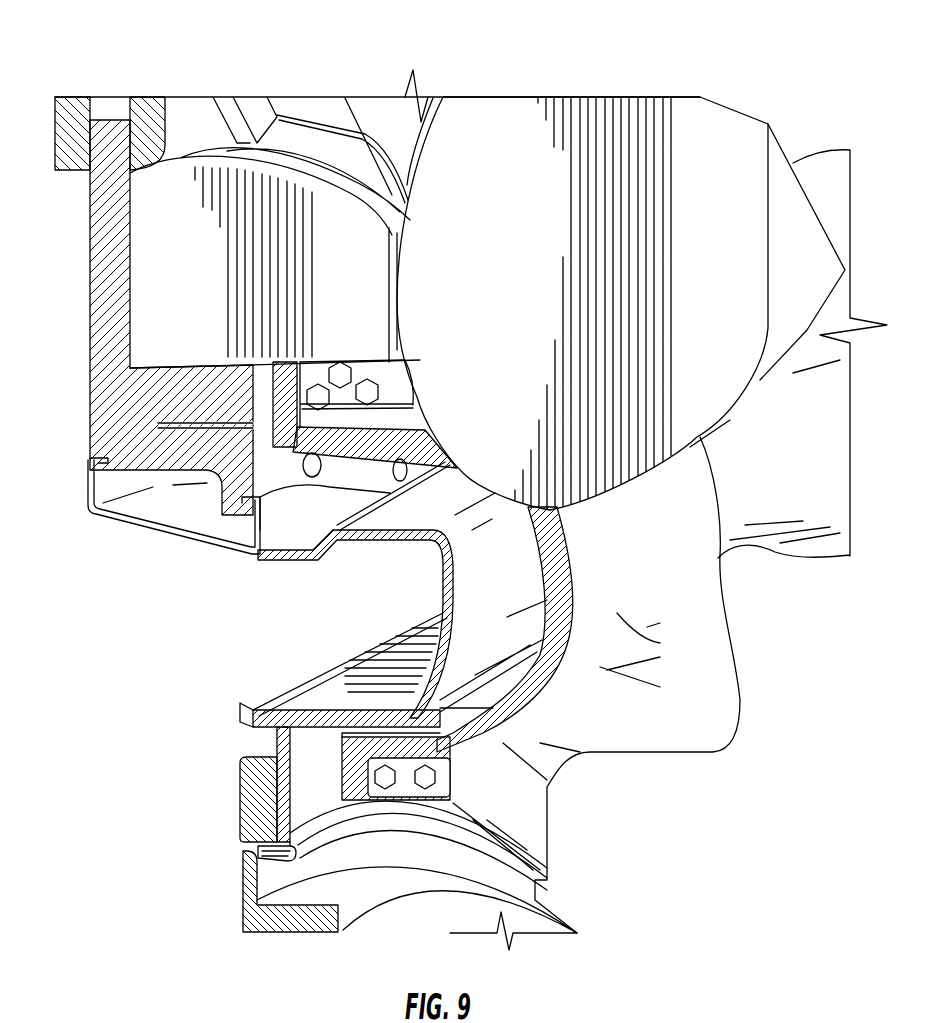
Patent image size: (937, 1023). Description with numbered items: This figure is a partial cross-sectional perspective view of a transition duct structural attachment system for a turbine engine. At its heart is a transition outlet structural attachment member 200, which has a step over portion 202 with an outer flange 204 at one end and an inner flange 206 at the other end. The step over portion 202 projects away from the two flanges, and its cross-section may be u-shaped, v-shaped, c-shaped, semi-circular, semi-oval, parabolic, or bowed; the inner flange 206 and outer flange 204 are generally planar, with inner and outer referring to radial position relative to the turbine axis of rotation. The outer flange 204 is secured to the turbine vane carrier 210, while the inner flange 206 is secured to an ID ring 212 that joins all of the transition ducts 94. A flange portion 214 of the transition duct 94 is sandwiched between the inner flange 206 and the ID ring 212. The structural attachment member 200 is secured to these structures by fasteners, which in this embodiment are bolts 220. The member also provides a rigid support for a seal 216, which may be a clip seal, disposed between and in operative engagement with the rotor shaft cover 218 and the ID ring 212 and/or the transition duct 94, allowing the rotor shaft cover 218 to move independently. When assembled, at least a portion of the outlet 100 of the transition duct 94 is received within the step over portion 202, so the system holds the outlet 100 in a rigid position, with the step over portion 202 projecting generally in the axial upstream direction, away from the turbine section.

The transition duct 94 is at (250, 717).
The outlet 100 is at (510, 637).
The transition outlet structural attachment member 200 is at (690, 582).
The step over portion 202 is at (620, 614).
The outer flange 204 is at (287, 393).
The inner flange 206 is at (343, 760).
The turbine vane carrier 210 is at (203, 403).
The ID ring 212 is at (253, 807).
The flange portion 214 is at (287, 783).
The seal 216 is at (297, 862).
The rotor shaft cover 218 is at (257, 905).
The bolts 220 is at (370, 385).